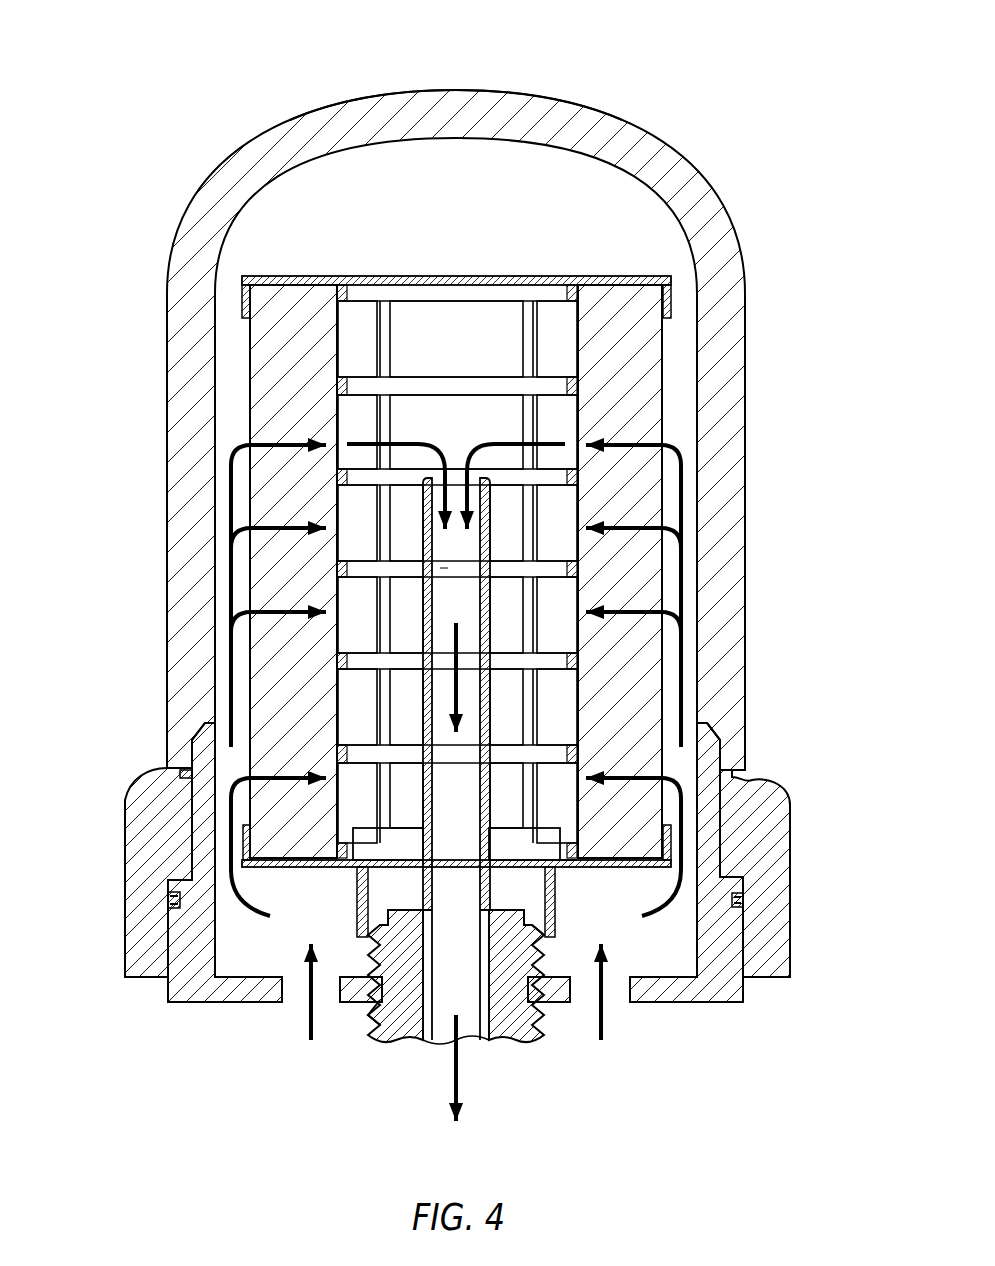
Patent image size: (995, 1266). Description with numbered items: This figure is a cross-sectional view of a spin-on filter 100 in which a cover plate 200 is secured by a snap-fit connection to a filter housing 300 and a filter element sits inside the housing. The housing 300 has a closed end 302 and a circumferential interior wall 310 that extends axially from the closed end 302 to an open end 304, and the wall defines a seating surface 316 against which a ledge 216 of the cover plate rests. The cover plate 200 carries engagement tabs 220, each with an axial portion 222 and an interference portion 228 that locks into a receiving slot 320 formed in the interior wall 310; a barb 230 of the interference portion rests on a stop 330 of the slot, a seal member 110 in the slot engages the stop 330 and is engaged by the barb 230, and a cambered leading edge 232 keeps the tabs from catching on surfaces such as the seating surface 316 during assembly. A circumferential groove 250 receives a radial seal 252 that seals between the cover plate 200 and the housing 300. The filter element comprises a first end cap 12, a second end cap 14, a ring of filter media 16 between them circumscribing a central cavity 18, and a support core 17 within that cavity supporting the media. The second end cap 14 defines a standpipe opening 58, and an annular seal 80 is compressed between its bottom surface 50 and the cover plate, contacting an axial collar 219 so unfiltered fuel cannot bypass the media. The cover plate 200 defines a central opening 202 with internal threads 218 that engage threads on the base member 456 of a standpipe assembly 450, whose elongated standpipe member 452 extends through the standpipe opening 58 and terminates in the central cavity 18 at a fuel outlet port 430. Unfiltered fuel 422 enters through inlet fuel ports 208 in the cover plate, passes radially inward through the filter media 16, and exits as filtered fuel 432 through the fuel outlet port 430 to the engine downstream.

The spin-on filter 100 is at (127, 60).
The filter housing 300 is at (455, 408).
The closed end 302 is at (521, 94).
The circumferential interior wall 310 is at (216, 436).
The receiving slot 320 is at (692, 732).
The cambered leading edge 232 is at (722, 748).
The barb 230 is at (748, 760).
The cover plate 200 is at (454, 894).
The engagement tab 220 is at (402, 851).
The interference portion 228 is at (200, 755).
The axial portion 222 is at (201, 820).
The ledge 216 is at (183, 862).
The stop 330 is at (733, 782).
The circumferential groove 250 is at (747, 921).
The radial seal 252 is at (742, 897).
The seal member 110 is at (183, 773).
The seating surface 316 is at (175, 897).
The open end 304 is at (765, 979).
The inlet fuel port 208 is at (293, 992).
The central opening 202 is at (480, 960).
The internal threads 218 is at (392, 934).
The axial collar 219 is at (562, 943).
The annular seal 80 is at (360, 900).
The first end cap 12 is at (500, 276).
The second end cap 14 is at (668, 872).
The filter media 16 is at (630, 385).
The support core 17 is at (460, 378).
The central cavity 18 is at (576, 408).
The standpipe opening 58 is at (479, 863).
The bottom surface 50 is at (578, 868).
The standpipe assembly 450 is at (274, 792).
The standpipe member 452 is at (456, 759).
The base member 456 is at (374, 1012).
The fuel outlet port 430 is at (447, 568).
The unfiltered fuel 422 is at (231, 663).
The filtered fuel 432 is at (488, 441).